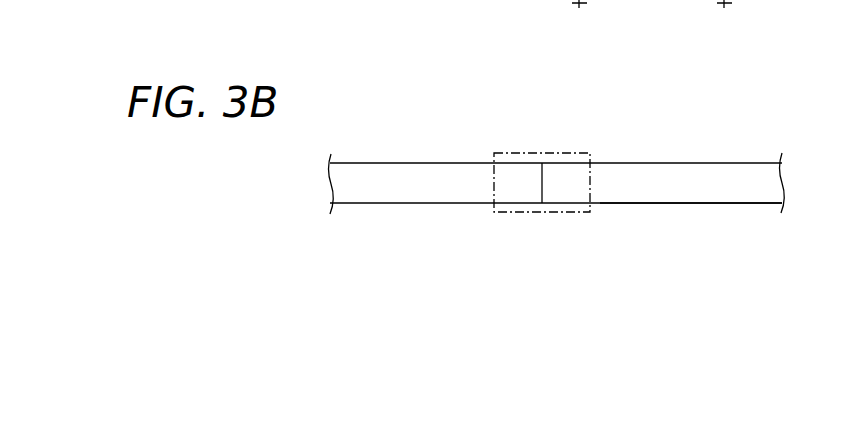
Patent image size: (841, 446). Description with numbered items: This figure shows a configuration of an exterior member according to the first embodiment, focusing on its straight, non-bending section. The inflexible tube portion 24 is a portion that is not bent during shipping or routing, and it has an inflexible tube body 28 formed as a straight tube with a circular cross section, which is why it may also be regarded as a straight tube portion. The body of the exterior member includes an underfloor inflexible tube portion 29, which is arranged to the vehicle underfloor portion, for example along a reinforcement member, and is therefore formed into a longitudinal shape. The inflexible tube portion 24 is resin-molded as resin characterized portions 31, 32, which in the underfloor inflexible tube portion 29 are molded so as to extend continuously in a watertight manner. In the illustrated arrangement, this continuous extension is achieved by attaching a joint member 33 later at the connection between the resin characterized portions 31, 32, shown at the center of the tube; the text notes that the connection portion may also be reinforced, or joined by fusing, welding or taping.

The inflexible tube portion 24 is at (419, 203).
The inflexible tube body 28 is at (732, 203).
The underfloor inflexible tube portion 29 is at (648, 203).
The resin characterized portion 31 is at (695, 163).
The resin characterized portion 32 is at (395, 163).
The joint member 33 is at (548, 152).